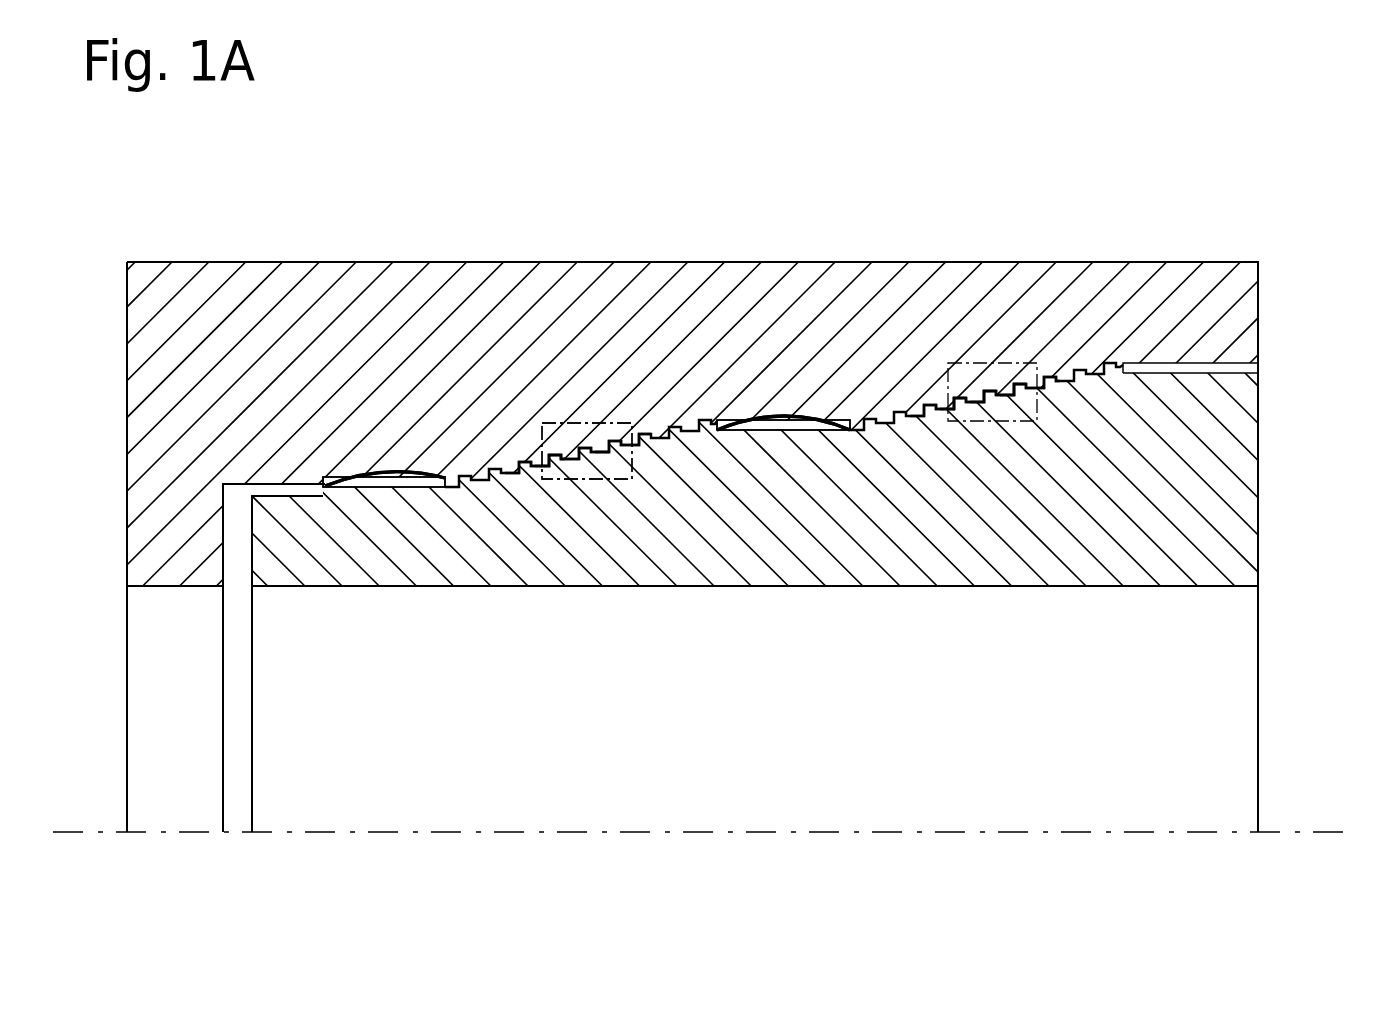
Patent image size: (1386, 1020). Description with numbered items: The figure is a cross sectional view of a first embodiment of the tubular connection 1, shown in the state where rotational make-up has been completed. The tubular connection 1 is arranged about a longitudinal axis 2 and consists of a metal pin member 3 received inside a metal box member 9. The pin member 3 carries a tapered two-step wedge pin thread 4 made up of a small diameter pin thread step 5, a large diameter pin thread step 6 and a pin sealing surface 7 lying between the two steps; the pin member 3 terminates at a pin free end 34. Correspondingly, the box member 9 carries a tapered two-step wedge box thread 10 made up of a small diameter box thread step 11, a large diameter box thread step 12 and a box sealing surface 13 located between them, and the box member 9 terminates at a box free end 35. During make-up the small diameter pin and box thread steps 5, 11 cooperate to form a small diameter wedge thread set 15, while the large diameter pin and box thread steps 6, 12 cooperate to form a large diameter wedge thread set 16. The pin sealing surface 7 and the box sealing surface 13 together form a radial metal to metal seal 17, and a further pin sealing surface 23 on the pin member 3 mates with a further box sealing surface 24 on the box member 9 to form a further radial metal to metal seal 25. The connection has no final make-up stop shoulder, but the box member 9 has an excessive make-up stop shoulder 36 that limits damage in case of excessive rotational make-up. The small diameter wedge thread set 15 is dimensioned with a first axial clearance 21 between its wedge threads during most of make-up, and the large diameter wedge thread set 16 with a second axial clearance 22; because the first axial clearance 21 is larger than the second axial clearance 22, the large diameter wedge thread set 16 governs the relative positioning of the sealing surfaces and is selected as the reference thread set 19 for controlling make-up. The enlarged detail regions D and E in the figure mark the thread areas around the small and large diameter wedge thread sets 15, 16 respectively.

The tubular connection 1 is at (1295, 232).
The longitudinal axis 2 is at (1305, 832).
The metal pin member 3 is at (1232, 600).
The tapered two-step wedge pin thread 4 is at (710, 352).
The small diameter pin thread step 5 is at (581, 412).
The large diameter pin thread step 6 is at (979, 352).
The pin sealing surface 7 is at (790, 390).
The metal box member 9 is at (218, 250).
The tapered two-step wedge box thread 10 is at (770, 500).
The small diameter box thread step 11 is at (590, 488).
The large diameter box thread step 12 is at (1003, 435).
The box sealing surface 13 is at (808, 434).
The small diameter wedge thread set 15 is at (553, 500).
The large diameter wedge thread set 16 is at (935, 434).
The radial metal to metal seal 17 is at (806, 401).
The reference thread set 19 is at (965, 439).
The first axial clearance 21 is at (624, 489).
The second axial clearance 22 is at (1040, 442).
The further pin sealing surface 23 is at (381, 452).
The further box sealing surface 24 is at (388, 486).
The further radial metal to metal seal 25 is at (403, 471).
The pin free end 34 is at (247, 562).
The box free end 35 is at (1268, 316).
The excessive make-up stop shoulder 36 is at (228, 520).
The detail region D is at (607, 423).
The detail region E is at (1022, 364).